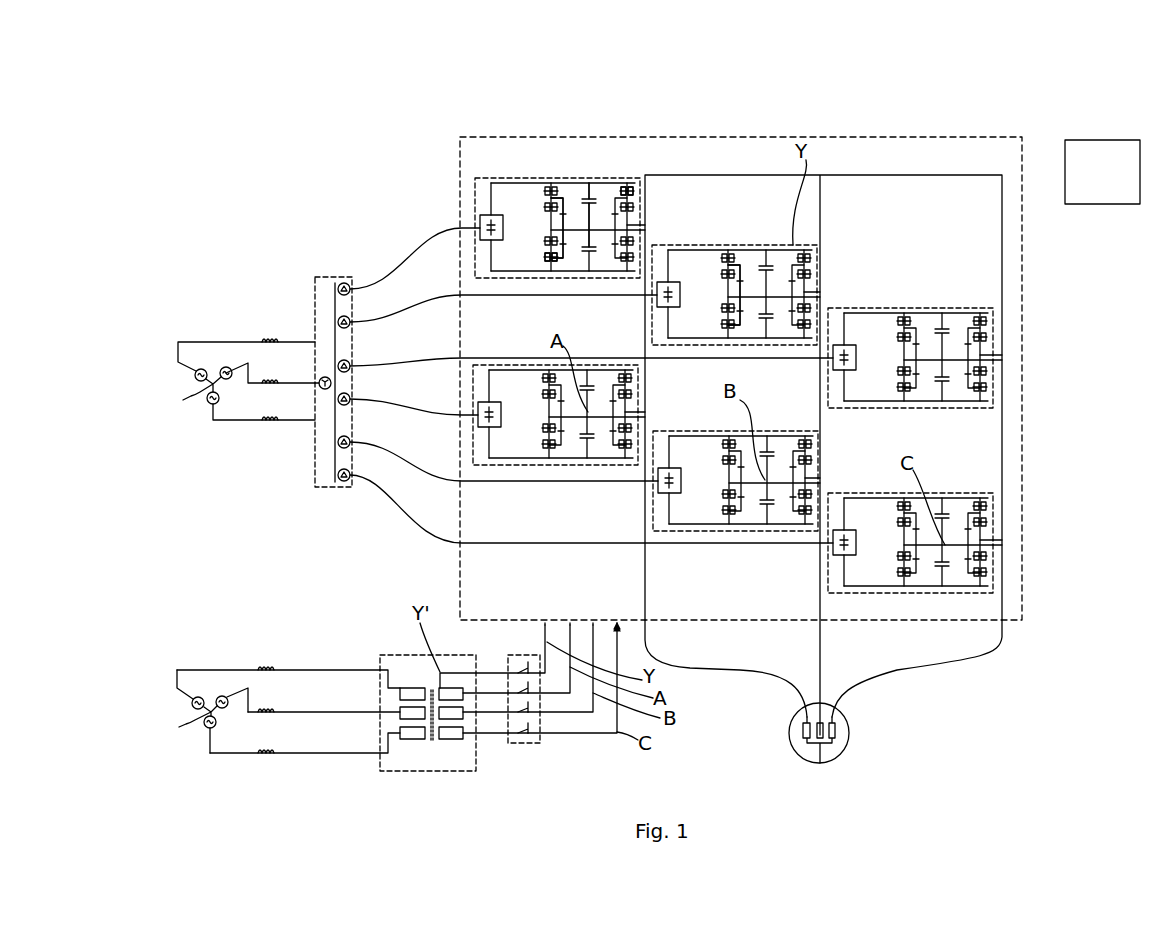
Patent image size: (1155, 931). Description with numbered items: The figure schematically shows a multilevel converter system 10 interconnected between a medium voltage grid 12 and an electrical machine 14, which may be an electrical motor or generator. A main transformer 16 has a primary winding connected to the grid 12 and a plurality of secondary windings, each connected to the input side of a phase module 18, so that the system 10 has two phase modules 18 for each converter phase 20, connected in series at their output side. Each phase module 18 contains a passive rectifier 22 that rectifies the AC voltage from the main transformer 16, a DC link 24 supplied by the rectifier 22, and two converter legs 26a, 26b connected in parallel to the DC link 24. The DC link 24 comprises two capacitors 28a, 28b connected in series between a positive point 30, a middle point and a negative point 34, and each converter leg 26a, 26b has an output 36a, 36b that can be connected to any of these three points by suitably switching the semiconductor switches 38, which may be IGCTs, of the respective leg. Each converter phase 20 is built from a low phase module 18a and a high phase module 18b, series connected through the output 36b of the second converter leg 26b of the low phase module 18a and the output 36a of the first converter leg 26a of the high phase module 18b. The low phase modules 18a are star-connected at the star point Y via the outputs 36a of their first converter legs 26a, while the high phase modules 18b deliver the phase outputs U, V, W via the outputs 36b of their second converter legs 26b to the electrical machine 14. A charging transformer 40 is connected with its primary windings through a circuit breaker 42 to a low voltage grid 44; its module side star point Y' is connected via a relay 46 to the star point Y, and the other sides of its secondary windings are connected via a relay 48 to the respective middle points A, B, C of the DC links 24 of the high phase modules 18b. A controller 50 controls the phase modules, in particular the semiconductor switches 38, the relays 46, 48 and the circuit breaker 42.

The multilevel converter system 10 is at (128, 137).
The medium voltage grid 12 is at (203, 310).
The electrical machine 14 is at (848, 742).
The main transformer 16 is at (330, 235).
The phase module 18 is at (723, 326).
The low phase module 18a is at (749, 233).
The high phase module 18b is at (475, 438).
The converter phase 20 is at (563, 510).
The rectifier 22 is at (442, 227).
The DC link 24 is at (599, 142).
The first converter leg 26a is at (641, 178).
The second converter leg 26b is at (542, 178).
The capacitor 28a is at (666, 172).
The capacitor 28b is at (556, 288).
The positive point 30 is at (567, 153).
The negative point 34 is at (595, 285).
The output of first converter leg 36a is at (710, 274).
The output of second converter leg 36b is at (516, 269).
The semiconductor switch 38 is at (512, 209).
The charging transformer 40 is at (412, 771).
The circuit breaker 42 is at (302, 755).
The low voltage grid 44 is at (200, 740).
The relay 46 is at (557, 704).
The relay 48 is at (543, 698).
The controller 50 is at (1082, 140).